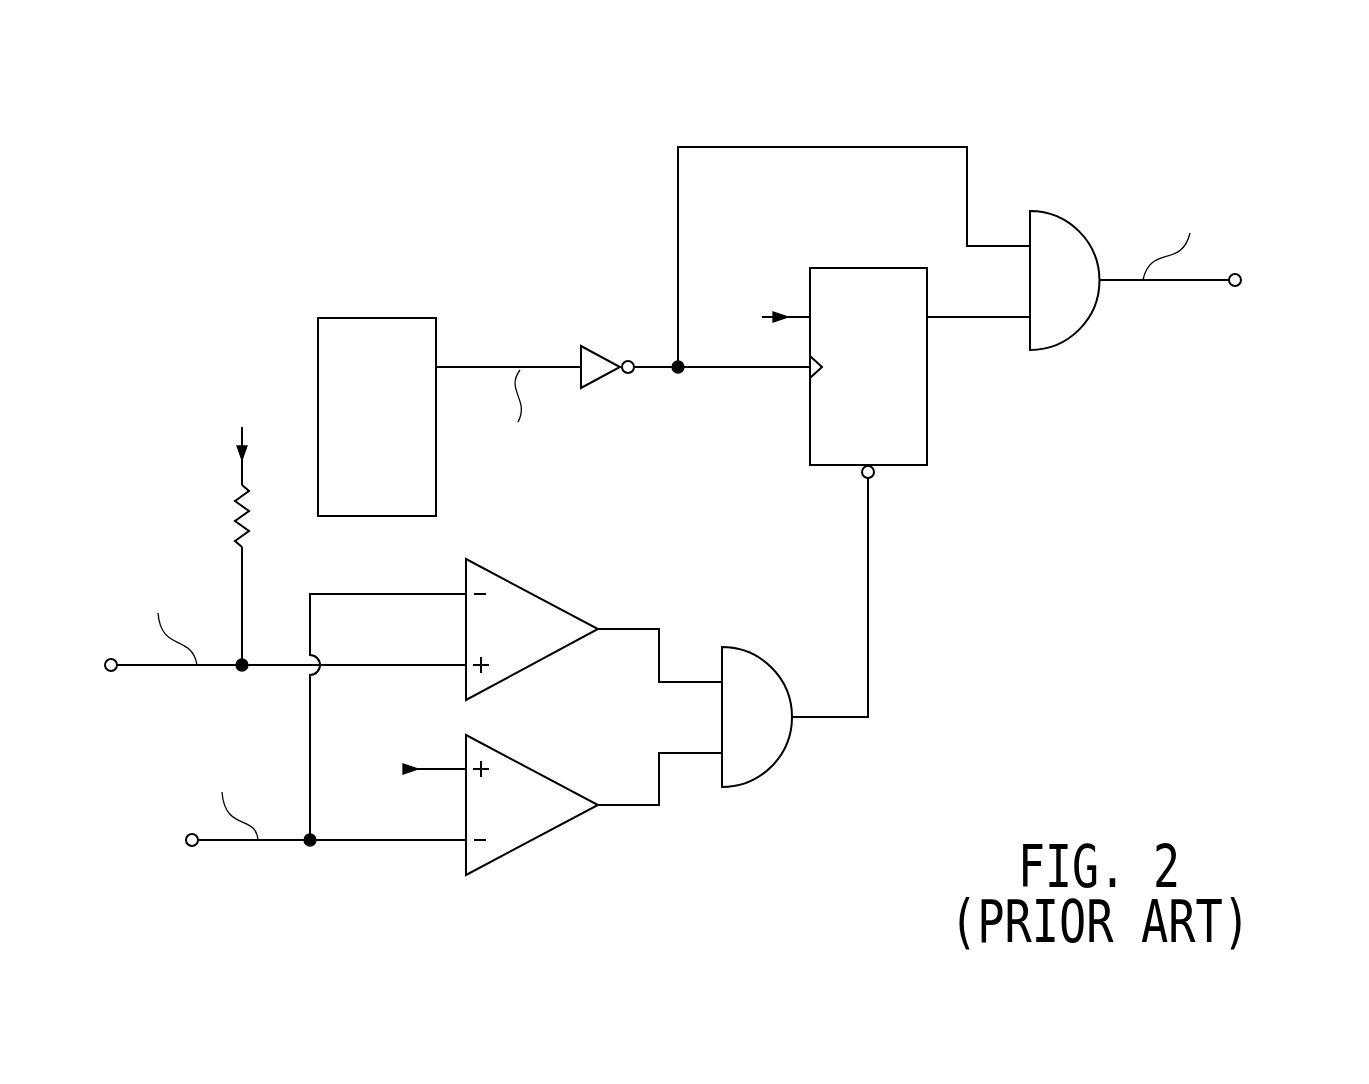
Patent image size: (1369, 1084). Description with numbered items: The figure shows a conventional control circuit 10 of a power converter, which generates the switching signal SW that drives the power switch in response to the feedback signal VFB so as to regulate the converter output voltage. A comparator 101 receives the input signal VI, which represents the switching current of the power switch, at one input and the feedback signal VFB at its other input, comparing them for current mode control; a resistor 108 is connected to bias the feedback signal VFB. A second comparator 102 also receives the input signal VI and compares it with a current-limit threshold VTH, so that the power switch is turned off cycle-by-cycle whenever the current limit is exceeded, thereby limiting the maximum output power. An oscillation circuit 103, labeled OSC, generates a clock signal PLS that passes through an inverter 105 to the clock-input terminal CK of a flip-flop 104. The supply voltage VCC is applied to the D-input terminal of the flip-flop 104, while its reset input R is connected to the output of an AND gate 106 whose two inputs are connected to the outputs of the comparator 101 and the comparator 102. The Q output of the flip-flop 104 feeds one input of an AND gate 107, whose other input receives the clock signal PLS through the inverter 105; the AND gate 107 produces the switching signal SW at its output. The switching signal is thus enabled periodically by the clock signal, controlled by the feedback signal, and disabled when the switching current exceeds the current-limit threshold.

The control circuit 10 is at (1362, 127).
The comparator 101 is at (545, 597).
The comparator 102 is at (545, 772).
The oscillation circuit 103 is at (332, 318).
The flip-flop 104 is at (823, 268).
The inverter 105 is at (608, 345).
The AND gate 106 is at (757, 655).
The AND gate 107 is at (1072, 223).
The resistor 108 is at (232, 512).